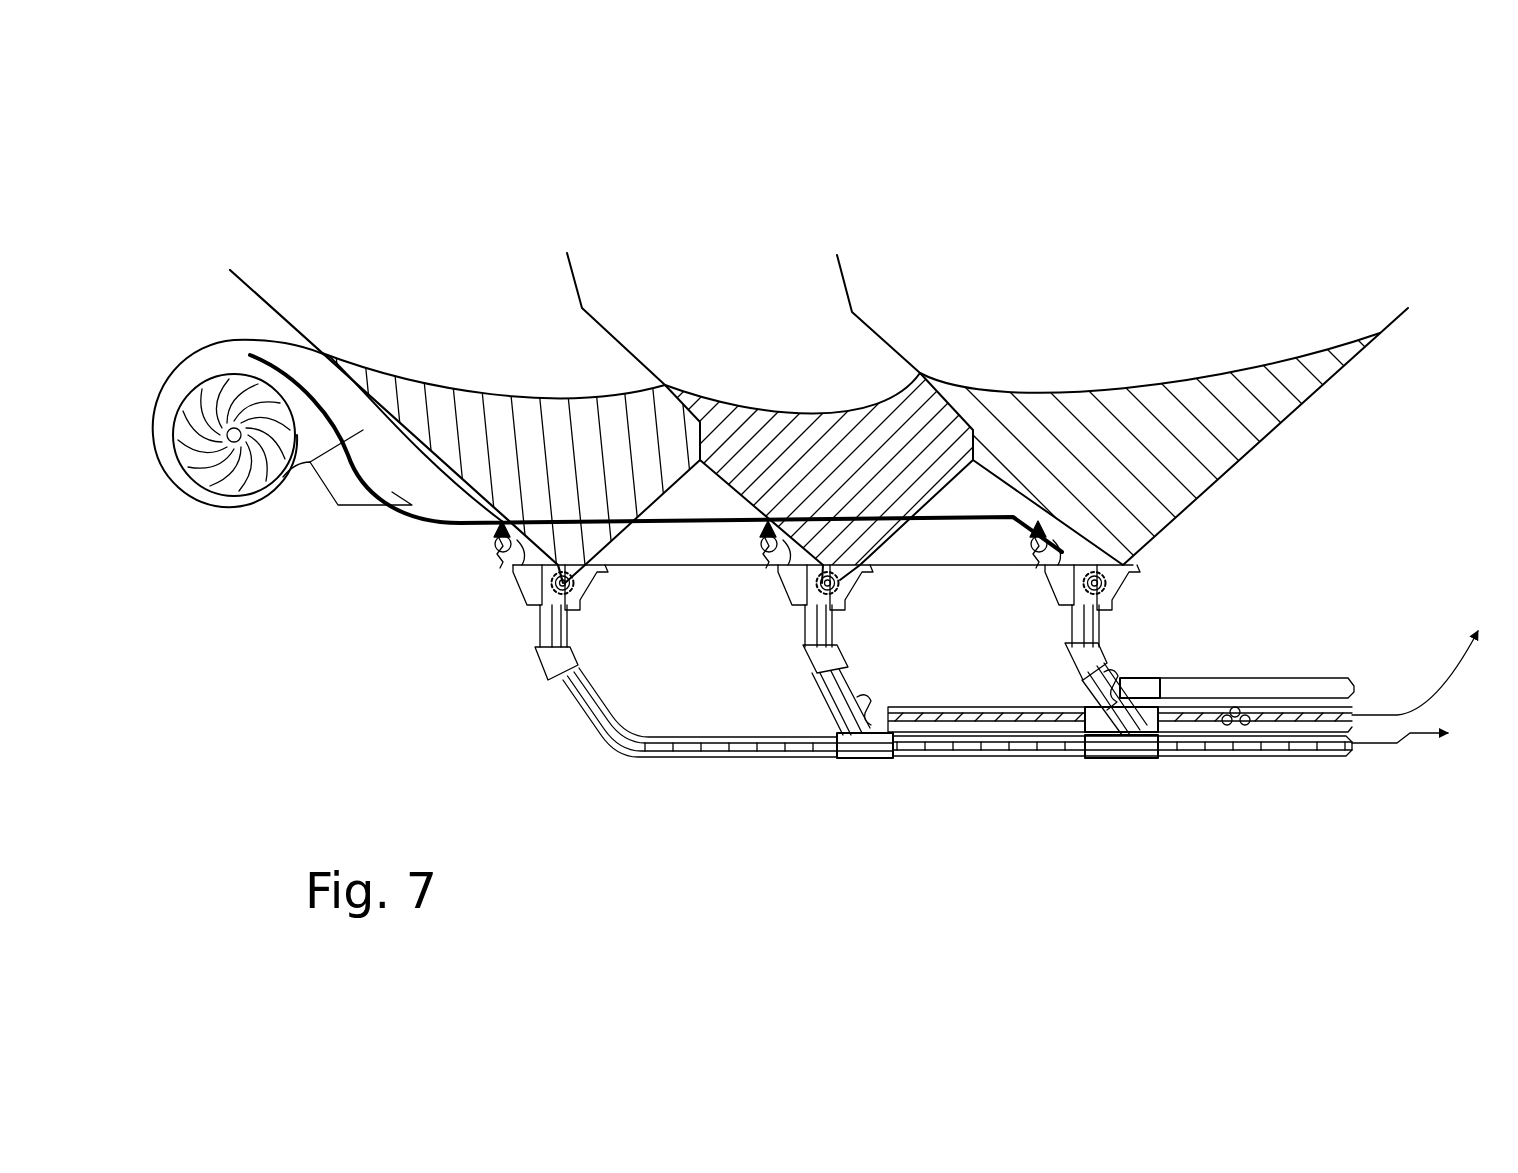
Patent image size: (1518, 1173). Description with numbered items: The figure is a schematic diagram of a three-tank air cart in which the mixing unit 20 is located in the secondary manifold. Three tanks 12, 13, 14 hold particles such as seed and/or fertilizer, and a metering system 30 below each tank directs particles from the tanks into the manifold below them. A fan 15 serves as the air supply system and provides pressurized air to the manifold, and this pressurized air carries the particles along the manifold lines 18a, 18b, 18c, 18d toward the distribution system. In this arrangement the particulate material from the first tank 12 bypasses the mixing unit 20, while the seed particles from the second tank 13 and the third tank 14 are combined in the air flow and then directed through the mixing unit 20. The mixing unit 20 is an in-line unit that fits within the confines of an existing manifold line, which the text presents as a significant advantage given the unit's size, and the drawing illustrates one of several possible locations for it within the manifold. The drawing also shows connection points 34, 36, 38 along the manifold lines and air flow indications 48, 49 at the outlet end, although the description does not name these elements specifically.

The first tank 12 is at (430, 329).
The second tank 13 is at (705, 322).
The third tank 14 is at (976, 307).
The fan 15 is at (210, 507).
The manifold line 18a is at (1263, 757).
The manifold line 18b is at (725, 758).
The manifold line 18c is at (1340, 707).
The manifold line 18d is at (940, 707).
The mixing unit 20 is at (1228, 727).
The metering system 30 is at (521, 594).
The duct junction 34 is at (830, 718).
The duct coupling 36 is at (1098, 680).
The duct housing 38 is at (1085, 712).
The air flow arrow 48 is at (1457, 663).
The air flow arrow 49 is at (1430, 737).